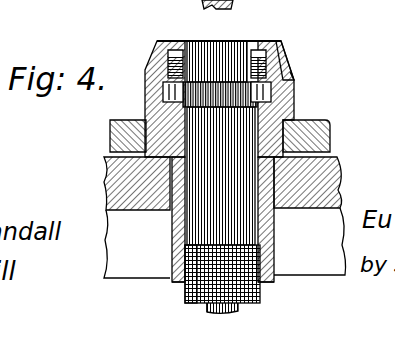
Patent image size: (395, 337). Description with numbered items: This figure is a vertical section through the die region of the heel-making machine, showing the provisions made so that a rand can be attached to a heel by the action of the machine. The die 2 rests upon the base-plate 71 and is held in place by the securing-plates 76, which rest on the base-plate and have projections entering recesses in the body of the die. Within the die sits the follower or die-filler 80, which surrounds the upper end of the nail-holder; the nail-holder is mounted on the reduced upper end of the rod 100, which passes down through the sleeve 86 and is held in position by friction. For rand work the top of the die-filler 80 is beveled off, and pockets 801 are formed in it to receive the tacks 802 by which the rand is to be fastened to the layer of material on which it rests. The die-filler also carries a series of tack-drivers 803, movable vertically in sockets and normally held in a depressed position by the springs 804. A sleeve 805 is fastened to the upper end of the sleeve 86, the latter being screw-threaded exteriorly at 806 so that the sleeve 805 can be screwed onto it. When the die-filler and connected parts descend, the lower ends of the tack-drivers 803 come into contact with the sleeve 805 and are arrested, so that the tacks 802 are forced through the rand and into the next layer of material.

The die 2 is at (290, 72).
The base-plate 71 is at (331, 174).
The securing-plates 76 is at (110, 141).
The follower or die-filler 80 is at (253, 40).
The sleeve 86 is at (250, 307).
The rod 100 is at (207, 310).
The pockets 801 is at (172, 25).
The tacks 802 is at (277, 52).
The tack-drivers 803 is at (146, 102).
The springs 804 is at (160, 63).
The sleeve 805 is at (275, 231).
The screw-threaded portion 806 is at (185, 291).